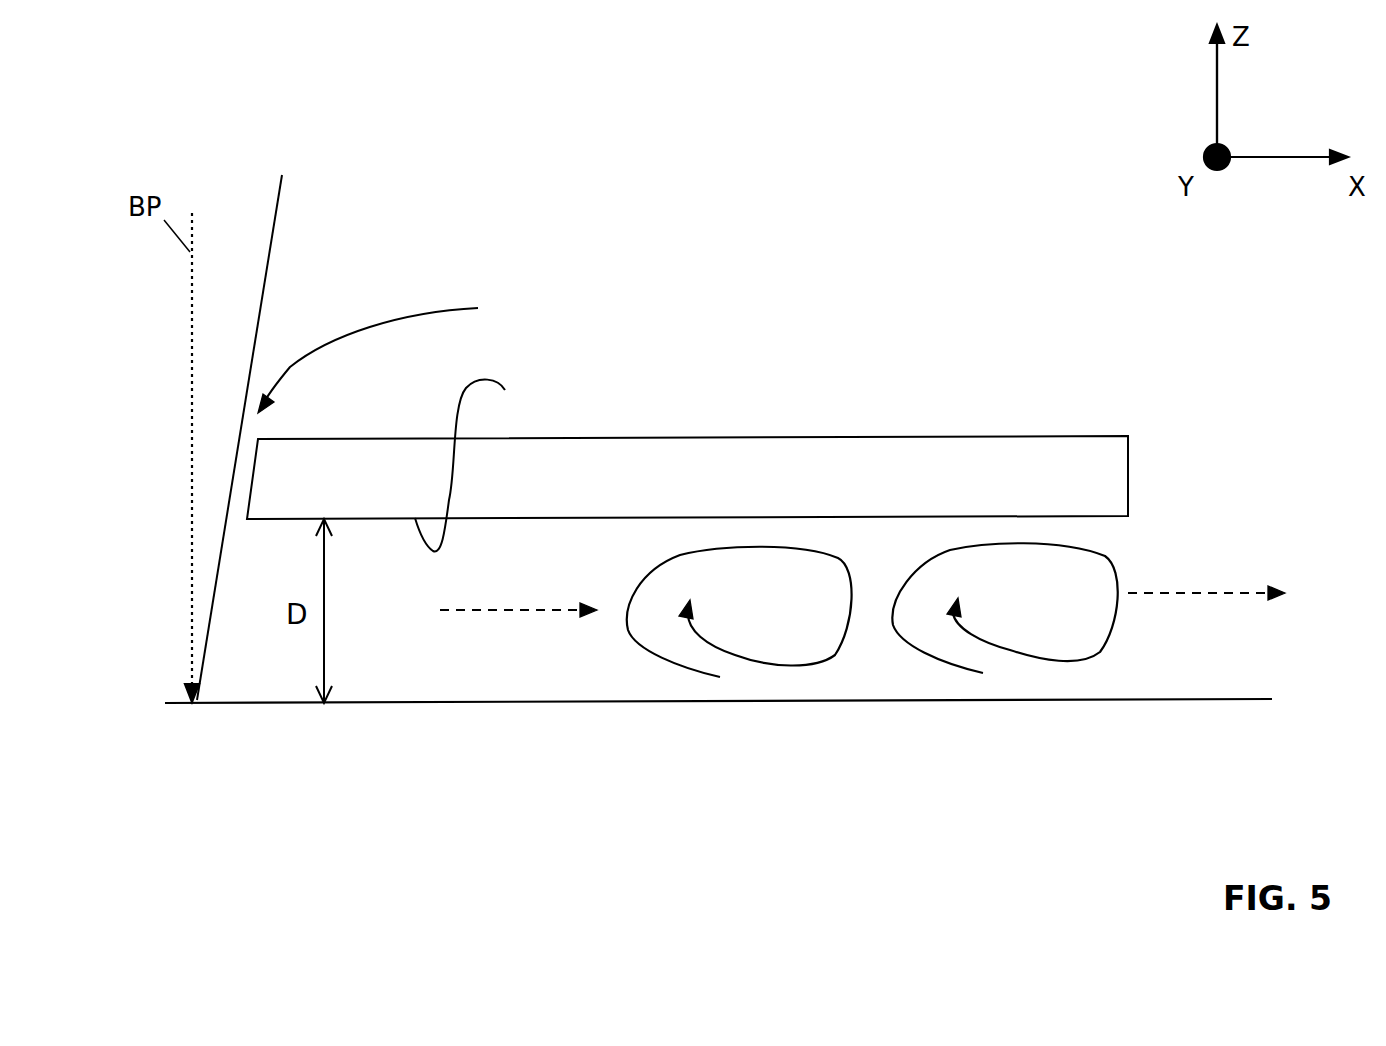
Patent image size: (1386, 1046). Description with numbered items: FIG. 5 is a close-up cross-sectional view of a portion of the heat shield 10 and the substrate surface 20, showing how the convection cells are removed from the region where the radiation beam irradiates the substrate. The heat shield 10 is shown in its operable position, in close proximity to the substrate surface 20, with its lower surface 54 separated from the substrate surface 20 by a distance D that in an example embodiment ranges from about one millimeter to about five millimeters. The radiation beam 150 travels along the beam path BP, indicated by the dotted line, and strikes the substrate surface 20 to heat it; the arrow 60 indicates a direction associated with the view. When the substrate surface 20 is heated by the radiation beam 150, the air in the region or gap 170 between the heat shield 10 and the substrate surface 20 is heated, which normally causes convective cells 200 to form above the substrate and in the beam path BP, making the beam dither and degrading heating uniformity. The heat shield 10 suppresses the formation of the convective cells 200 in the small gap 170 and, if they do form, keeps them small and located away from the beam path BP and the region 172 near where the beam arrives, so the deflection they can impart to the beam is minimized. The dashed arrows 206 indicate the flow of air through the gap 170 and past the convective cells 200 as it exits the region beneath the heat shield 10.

The heat shield 10 is at (1156, 460).
The substrate surface 20 is at (1238, 698).
The heat shield lower surface 54 is at (477, 466).
The direction of slider motion 60 is at (391, 353).
The radiation beam 150 is at (270, 228).
The region (gap) 170 is at (560, 591).
The region at leading edge 172 is at (273, 661).
The convective cells 200 is at (857, 690).
The airflow 206 is at (475, 612).